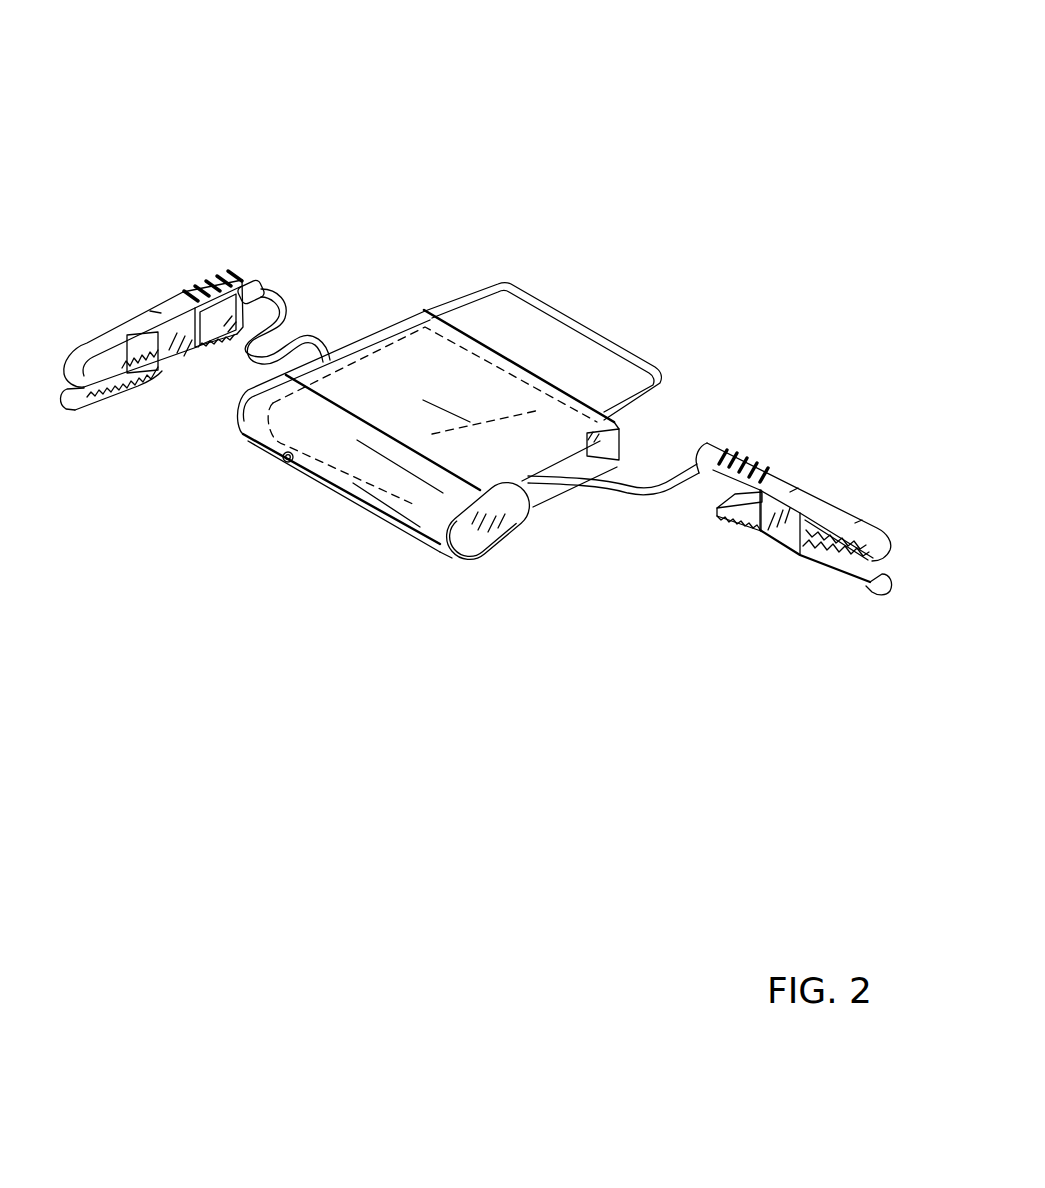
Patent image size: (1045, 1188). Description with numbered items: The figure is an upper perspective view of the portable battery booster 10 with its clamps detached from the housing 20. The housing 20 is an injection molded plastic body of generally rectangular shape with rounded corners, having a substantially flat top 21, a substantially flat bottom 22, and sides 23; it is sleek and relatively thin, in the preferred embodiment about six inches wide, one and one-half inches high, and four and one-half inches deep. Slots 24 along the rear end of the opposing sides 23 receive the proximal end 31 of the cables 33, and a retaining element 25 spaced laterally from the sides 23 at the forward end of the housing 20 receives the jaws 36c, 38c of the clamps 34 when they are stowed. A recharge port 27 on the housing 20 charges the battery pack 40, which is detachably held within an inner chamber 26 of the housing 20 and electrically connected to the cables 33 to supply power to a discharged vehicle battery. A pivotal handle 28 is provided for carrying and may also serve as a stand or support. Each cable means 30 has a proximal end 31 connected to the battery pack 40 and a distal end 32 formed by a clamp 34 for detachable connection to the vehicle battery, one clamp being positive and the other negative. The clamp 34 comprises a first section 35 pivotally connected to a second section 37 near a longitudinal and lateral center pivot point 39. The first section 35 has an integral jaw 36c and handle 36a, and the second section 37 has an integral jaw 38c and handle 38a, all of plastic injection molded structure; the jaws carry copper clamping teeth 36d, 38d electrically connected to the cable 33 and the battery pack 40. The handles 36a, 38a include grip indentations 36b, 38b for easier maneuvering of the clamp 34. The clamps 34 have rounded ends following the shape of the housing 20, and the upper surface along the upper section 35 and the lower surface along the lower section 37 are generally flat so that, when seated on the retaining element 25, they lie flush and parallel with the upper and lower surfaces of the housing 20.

The portable battery booster 10 is at (580, 96).
The housing 20 is at (288, 576).
The top 21 is at (424, 348).
The bottom 22 is at (344, 498).
The sides 23 is at (556, 497).
The slots 24 is at (607, 452).
The retaining element 25 is at (470, 542).
The inner chamber 26 is at (424, 550).
The recharge port 27 is at (287, 459).
The pivotal handle 28 is at (586, 325).
The cable means 30 is at (590, 678).
The proximal end 31 is at (569, 560).
The distal end 32 is at (883, 620).
The cable 33 is at (309, 346).
The clamp 34 is at (800, 404).
The first section 35 is at (862, 494).
The handle 36a is at (231, 272).
The grip indentations 36b is at (198, 288).
The jaw 36c is at (78, 346).
The copper clamping teeth 36d is at (76, 363).
The handle 38a is at (259, 285).
The grip indentations 38b is at (236, 354).
The jaw 38c is at (88, 400).
The copper clamping teeth 38d is at (126, 390).
The second section 37 is at (775, 564).
The center pivot point 39 is at (767, 530).
The battery pack 40 is at (305, 438).